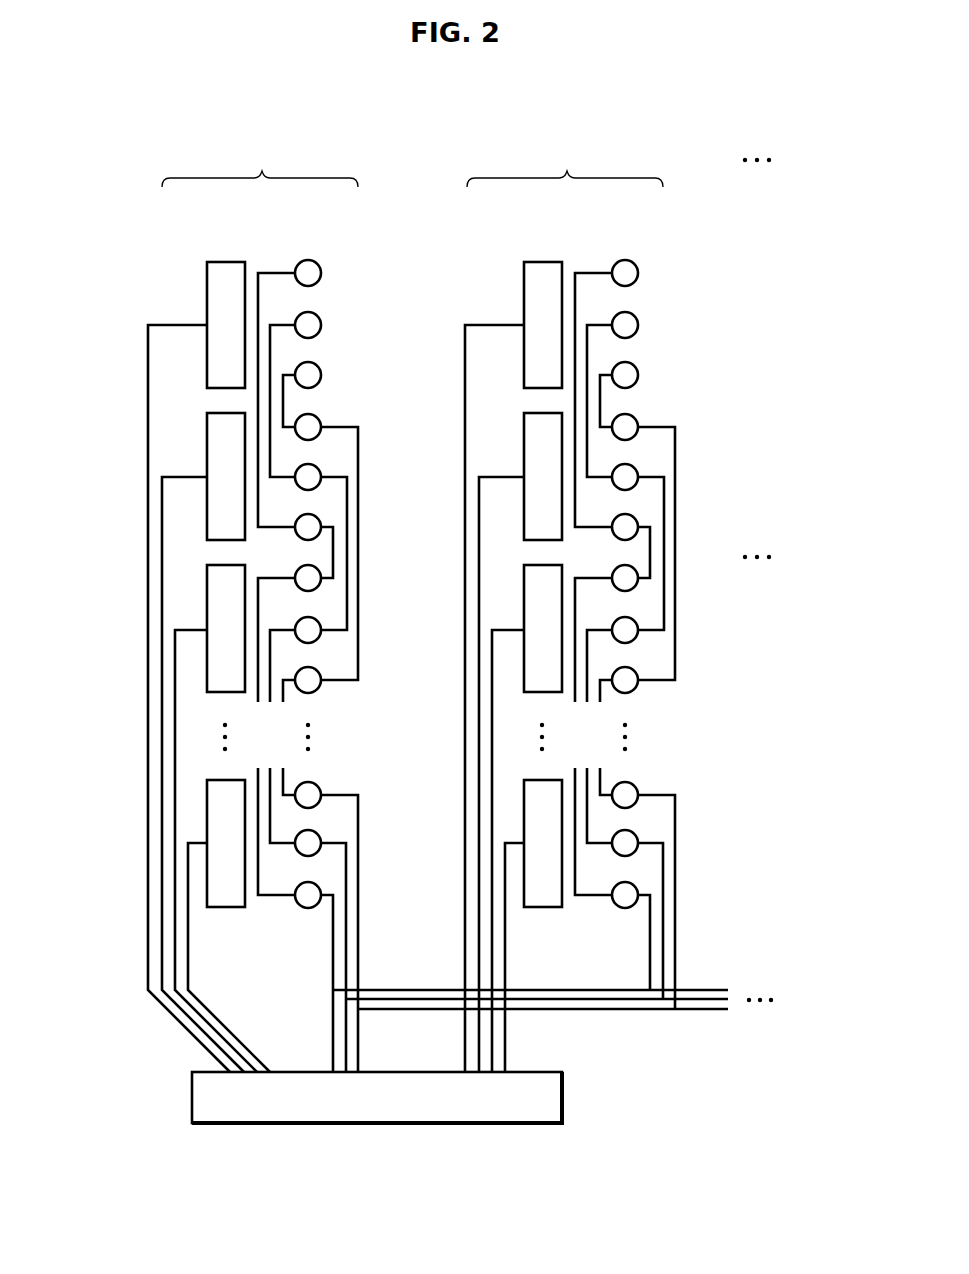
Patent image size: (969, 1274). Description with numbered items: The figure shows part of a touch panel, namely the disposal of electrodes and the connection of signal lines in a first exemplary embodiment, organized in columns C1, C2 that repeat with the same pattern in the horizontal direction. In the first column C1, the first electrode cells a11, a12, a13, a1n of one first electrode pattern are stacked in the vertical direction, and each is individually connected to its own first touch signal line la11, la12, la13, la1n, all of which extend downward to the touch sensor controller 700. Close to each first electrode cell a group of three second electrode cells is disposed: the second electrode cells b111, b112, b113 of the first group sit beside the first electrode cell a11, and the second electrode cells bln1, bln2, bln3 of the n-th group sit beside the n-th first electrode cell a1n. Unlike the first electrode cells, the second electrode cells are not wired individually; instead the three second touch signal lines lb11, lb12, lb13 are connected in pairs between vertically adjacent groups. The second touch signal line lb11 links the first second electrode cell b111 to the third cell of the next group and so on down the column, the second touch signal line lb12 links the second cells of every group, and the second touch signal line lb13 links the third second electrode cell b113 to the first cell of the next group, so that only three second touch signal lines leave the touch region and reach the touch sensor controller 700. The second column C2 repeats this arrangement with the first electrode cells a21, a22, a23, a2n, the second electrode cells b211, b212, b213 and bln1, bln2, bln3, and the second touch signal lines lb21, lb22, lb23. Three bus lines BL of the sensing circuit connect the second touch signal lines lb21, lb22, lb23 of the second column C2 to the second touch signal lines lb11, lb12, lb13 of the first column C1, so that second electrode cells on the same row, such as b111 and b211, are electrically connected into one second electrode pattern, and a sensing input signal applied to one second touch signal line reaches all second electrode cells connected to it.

The first column C1 is at (260, 162).
The second column C2 is at (565, 162).
The first electrode cell a11 is at (226, 325).
The first electrode cell a12 is at (226, 476).
The first electrode cell a13 is at (167, 628).
The first electrode cell a1n is at (226, 843).
The first electrode cell a21 is at (513, 667).
The first electrode cell a22 is at (520, 742).
The first electrode cell a23 is at (527, 818).
The first electrode cell a2n is at (533, 926).
The second electrode cell b111 is at (321, 273).
The second electrode cell b112 is at (321, 325).
The second electrode cell b113 is at (321, 375).
The second electrode cell b211 is at (638, 273).
The second electrode cell b212 is at (638, 325).
The second electrode cell b213 is at (638, 375).
The second electrode cell bln1 is at (318, 784).
The second electrode cell bln2 is at (318, 832).
The second electrode cell bln3 is at (318, 884).
The first touch signal line la11 is at (148, 358).
The first touch signal line la12 is at (162, 508).
The first touch signal line la13 is at (175, 660).
The first touch signal line la1n is at (188, 877).
The second touch signal line lb11 is at (273, 272).
The second touch signal line lb12 is at (270, 347).
The second touch signal line lb13 is at (283, 398).
The second touch signal line lb21 is at (590, 272).
The second touch signal line lb22 is at (587, 347).
The second touch signal line lb23 is at (600, 398).
The bus lines BL is at (778, 973).
The touch sensor controller 700 is at (563, 1098).